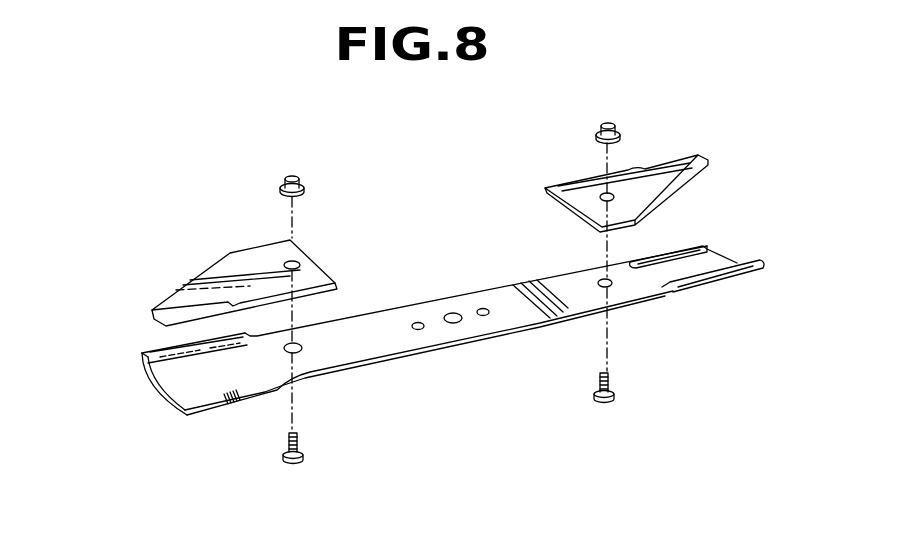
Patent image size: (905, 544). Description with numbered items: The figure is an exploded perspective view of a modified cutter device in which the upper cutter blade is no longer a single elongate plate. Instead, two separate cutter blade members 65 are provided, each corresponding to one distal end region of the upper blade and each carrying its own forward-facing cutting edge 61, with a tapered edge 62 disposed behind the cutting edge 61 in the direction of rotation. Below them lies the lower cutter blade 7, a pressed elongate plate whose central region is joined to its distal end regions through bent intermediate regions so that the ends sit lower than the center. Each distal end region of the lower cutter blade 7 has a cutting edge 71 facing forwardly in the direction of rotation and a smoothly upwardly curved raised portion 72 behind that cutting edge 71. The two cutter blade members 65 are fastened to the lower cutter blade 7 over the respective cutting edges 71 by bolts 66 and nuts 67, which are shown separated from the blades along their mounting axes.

The lower cutter blade 7 is at (513, 330).
The cutting edges 71 is at (227, 403).
The raised portions 72 is at (147, 377).
The cutting edges 61 is at (187, 320).
The tapered edges 62 is at (207, 278).
The cutter blade members 65 is at (315, 272).
The bolts 66 is at (297, 462).
The nuts 67 is at (291, 176).